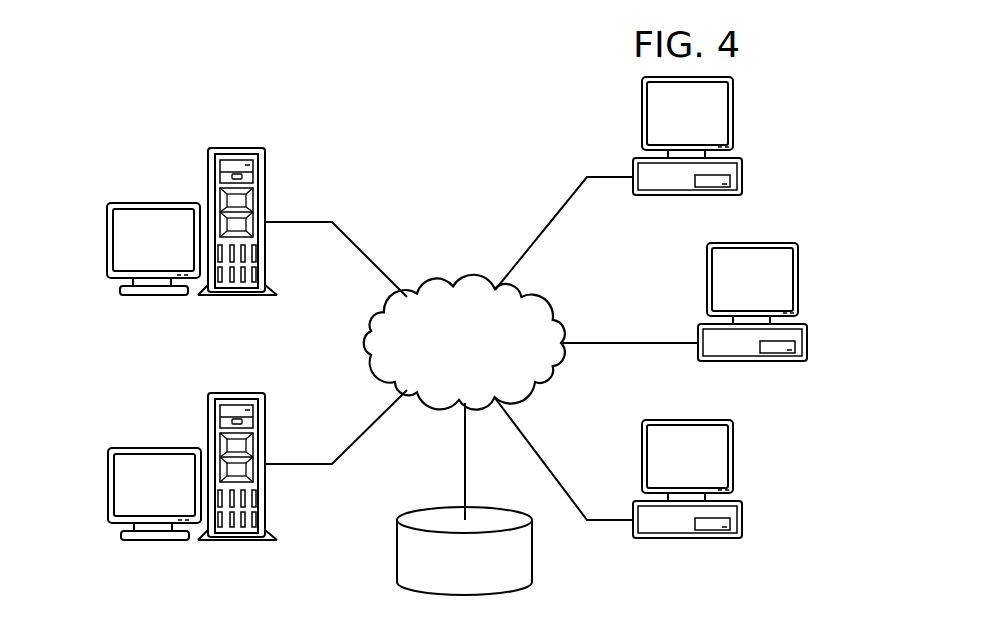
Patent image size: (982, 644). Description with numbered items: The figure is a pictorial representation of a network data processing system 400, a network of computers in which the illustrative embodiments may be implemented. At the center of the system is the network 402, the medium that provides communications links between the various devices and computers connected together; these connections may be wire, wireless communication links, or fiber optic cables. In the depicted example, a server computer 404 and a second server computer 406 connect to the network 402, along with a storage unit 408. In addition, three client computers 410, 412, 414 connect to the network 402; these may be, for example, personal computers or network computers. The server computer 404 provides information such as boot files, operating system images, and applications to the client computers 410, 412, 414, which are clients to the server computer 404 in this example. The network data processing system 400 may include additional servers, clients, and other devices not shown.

The network data processing system 400 is at (336, 134).
The network 402 is at (458, 284).
The server computer 404 is at (106, 240).
The server computer 406 is at (107, 484).
The storage unit 408 is at (397, 552).
The client computer 410 is at (742, 166).
The client computer 412 is at (808, 355).
The client computer 414 is at (742, 530).